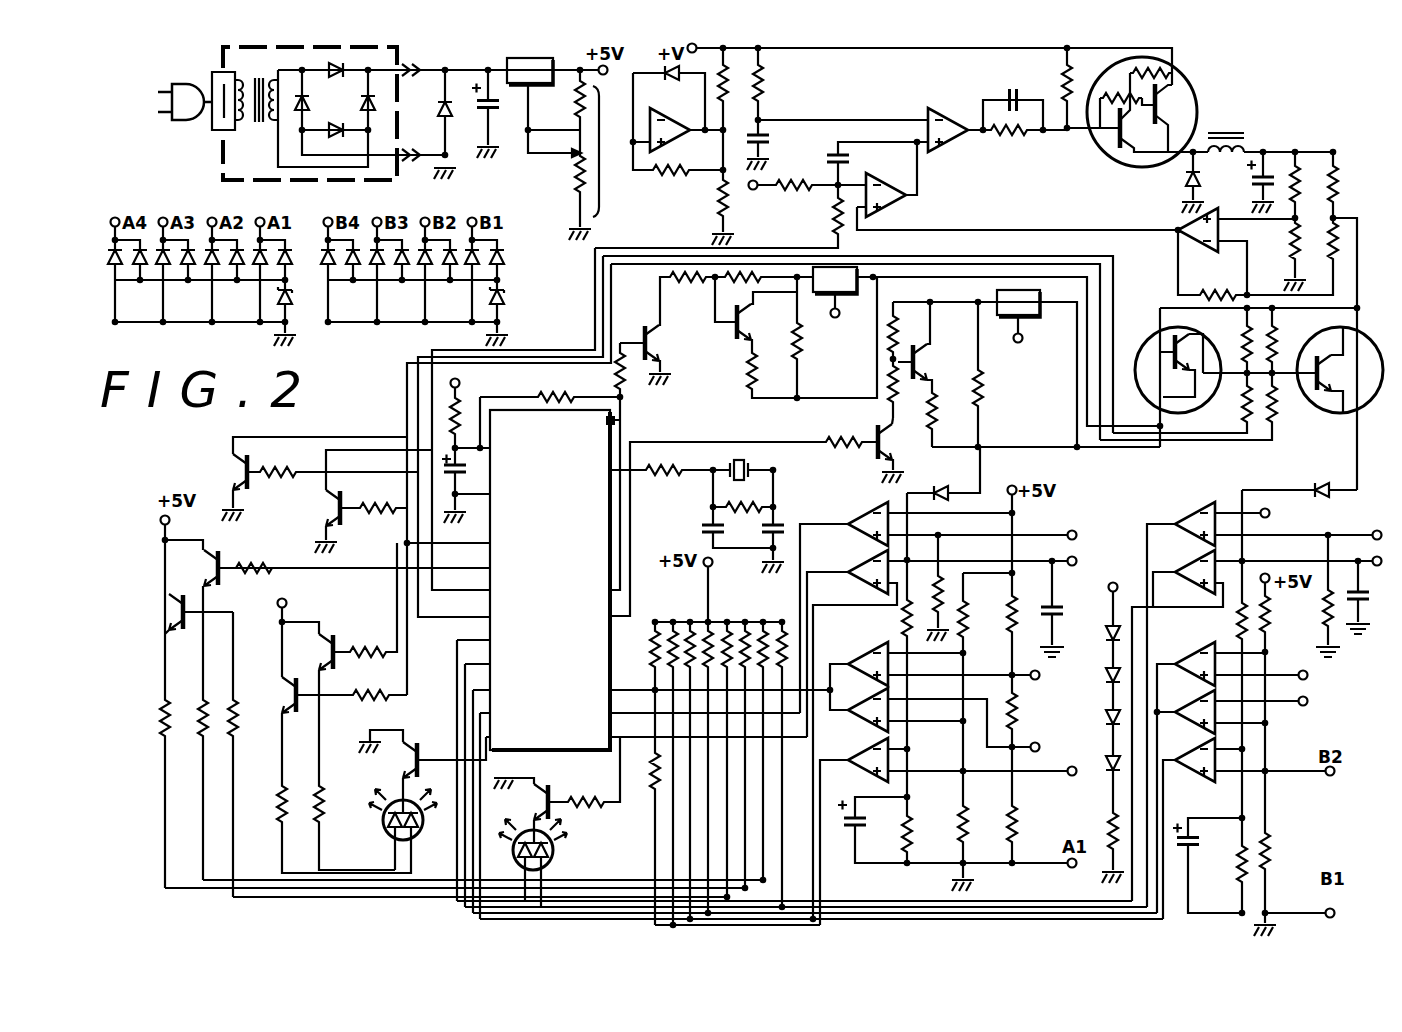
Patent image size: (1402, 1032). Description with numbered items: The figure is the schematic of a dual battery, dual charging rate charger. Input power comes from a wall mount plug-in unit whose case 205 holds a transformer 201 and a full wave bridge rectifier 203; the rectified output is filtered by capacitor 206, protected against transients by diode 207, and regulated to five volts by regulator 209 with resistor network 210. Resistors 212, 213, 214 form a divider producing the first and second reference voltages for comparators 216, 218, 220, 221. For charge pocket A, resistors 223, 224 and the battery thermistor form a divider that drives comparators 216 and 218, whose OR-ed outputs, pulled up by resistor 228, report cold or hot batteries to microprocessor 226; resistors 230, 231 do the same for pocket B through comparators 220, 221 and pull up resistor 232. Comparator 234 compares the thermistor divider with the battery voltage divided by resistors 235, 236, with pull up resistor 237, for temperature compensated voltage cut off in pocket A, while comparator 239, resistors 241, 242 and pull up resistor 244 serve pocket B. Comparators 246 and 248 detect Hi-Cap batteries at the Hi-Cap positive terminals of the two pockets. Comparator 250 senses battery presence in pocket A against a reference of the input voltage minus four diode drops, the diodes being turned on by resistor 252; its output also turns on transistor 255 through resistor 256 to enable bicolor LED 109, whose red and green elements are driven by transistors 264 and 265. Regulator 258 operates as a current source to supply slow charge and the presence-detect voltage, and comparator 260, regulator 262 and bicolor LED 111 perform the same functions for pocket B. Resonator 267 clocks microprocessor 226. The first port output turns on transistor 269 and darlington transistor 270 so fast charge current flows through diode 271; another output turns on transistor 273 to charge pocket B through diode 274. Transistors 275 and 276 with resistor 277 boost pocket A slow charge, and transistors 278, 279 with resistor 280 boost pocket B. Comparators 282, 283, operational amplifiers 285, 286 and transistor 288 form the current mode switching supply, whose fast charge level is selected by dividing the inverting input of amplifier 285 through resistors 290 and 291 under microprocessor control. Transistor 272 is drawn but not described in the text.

The bicolor light emitting diode 109 is at (383, 832).
The bicolor LED 111 is at (553, 862).
The transformer 201 is at (245, 80).
The full wave bridge rectifier 203 is at (337, 115).
The case 205 is at (223, 152).
The capacitor 206 is at (473, 112).
The diode 207 is at (440, 115).
The regulator 209 is at (542, 85).
The resistor network 210 is at (603, 153).
The resistor 212 is at (1032, 602).
The resistor 213 is at (1020, 708).
The resistor 214 is at (1020, 818).
The comparator 216 is at (862, 728).
The comparator 218 is at (862, 655).
The comparator 220 is at (1180, 658).
The comparator 221 is at (1258, 721).
The resistor 223 is at (985, 595).
The resistor 224 is at (982, 806).
The microprocessor 226 is at (495, 630).
The pull up resistor 228 is at (662, 600).
The resistor 230 is at (1271, 620).
The resistor 231 is at (1290, 834).
The pull up resistor 232 is at (760, 632).
The comparator 234 is at (862, 772).
The resistor 235 is at (900, 618).
The resistor 236 is at (898, 830).
The pull up resistor 237 is at (676, 632).
The comparator 239 is at (1186, 782).
The resistor 241 is at (1236, 616).
The resistor 242 is at (1237, 862).
The pull up resistor 244 is at (778, 634).
The comparator 246 is at (860, 513).
The comparator 248 is at (1188, 513).
The comparator 250 is at (860, 562).
The resistor 252 is at (1108, 840).
The transistor 255 is at (408, 765).
The resistor 256 is at (670, 807).
The regulator 258 is at (1042, 317).
The comparator 260 is at (1261, 725).
The regulator 262 is at (857, 295).
The transistor 264 is at (342, 633).
The transistor 265 is at (290, 690).
The resonator 267 is at (726, 466).
The transistor 269 is at (327, 507).
The darlington transistor 270 is at (1150, 342).
The diode 271 is at (943, 473).
The transistor 272 is at (235, 470).
The transistor 273 is at (1328, 414).
The diode 274 is at (1310, 488).
The transistor 275 is at (872, 432).
The transistor 276 is at (925, 352).
The resistor 277 is at (985, 398).
The transistor 278 is at (657, 344).
The transistor 279 is at (748, 327).
The resistor 280 is at (747, 372).
The comparator 282 is at (682, 146).
The comparator 283 is at (962, 107).
The operational amplifier 285 is at (896, 201).
The operational amplifier 286 is at (1212, 250).
The transistor 288 is at (1188, 87).
The resistor 290 is at (833, 208).
The resistor 291 is at (802, 180).